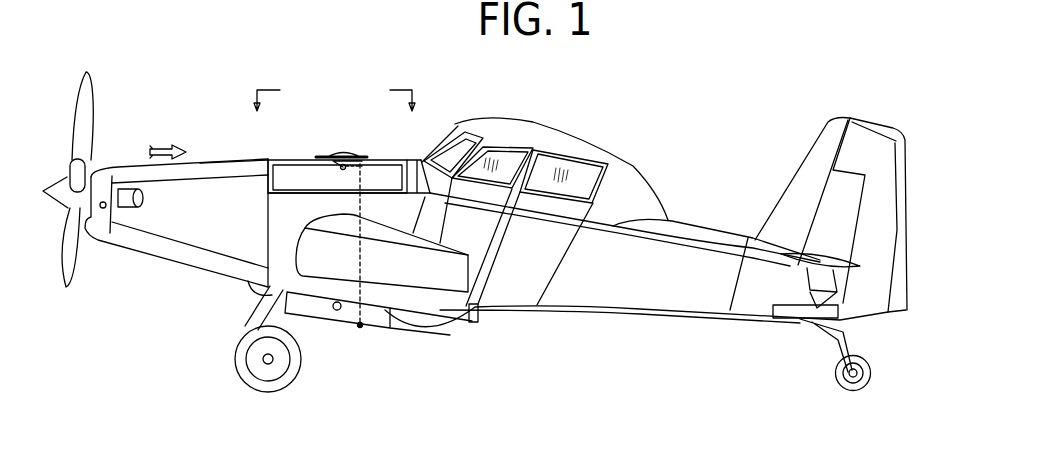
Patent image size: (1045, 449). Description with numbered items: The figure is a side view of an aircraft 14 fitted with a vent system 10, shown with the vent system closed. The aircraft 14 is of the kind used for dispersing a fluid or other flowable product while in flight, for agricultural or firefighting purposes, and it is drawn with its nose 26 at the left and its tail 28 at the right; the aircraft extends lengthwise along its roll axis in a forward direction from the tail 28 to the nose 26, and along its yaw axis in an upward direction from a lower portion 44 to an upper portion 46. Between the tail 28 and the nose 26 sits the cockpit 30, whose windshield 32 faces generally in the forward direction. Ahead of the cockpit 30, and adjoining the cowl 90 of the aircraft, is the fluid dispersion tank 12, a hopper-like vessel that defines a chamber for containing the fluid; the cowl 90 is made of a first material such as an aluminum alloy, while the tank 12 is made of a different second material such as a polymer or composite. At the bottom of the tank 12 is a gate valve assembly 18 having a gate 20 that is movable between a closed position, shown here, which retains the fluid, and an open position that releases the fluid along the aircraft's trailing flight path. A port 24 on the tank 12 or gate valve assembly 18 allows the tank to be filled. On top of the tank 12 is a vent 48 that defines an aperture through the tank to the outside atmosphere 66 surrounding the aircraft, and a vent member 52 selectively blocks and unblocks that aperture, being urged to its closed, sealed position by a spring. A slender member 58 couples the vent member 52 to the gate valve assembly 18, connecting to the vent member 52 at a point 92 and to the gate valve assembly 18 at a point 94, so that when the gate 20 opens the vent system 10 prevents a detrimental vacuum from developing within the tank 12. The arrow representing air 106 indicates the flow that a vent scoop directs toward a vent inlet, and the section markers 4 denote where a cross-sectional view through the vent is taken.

The section line 4- 4 is at (336, 97).
The aircraft 10 is at (572, 185).
The hopper 12 is at (279, 160).
The vertical stabilizer 14 is at (803, 163).
The main landing gear 18 is at (247, 296).
The spray boom housing 20 is at (340, 326).
The fastener 24 is at (331, 310).
The propeller 26 is at (47, 188).
The tail assembly 28 is at (907, 303).
The cabin window 30 is at (510, 158).
The windshield 32 is at (449, 150).
The fuselage 44 is at (498, 310).
The cabin roof 46 is at (537, 126).
The fuselage section 48 is at (397, 170).
The hopper lid 52 is at (341, 169).
The vertical reference line 58 is at (363, 266).
The engine cowling 66 is at (171, 90).
The cowl top panel 90 is at (250, 160).
The lid hinge 92 is at (362, 168).
The reference arrow 94 is at (363, 327).
The direction of travel arrow 106 is at (172, 145).